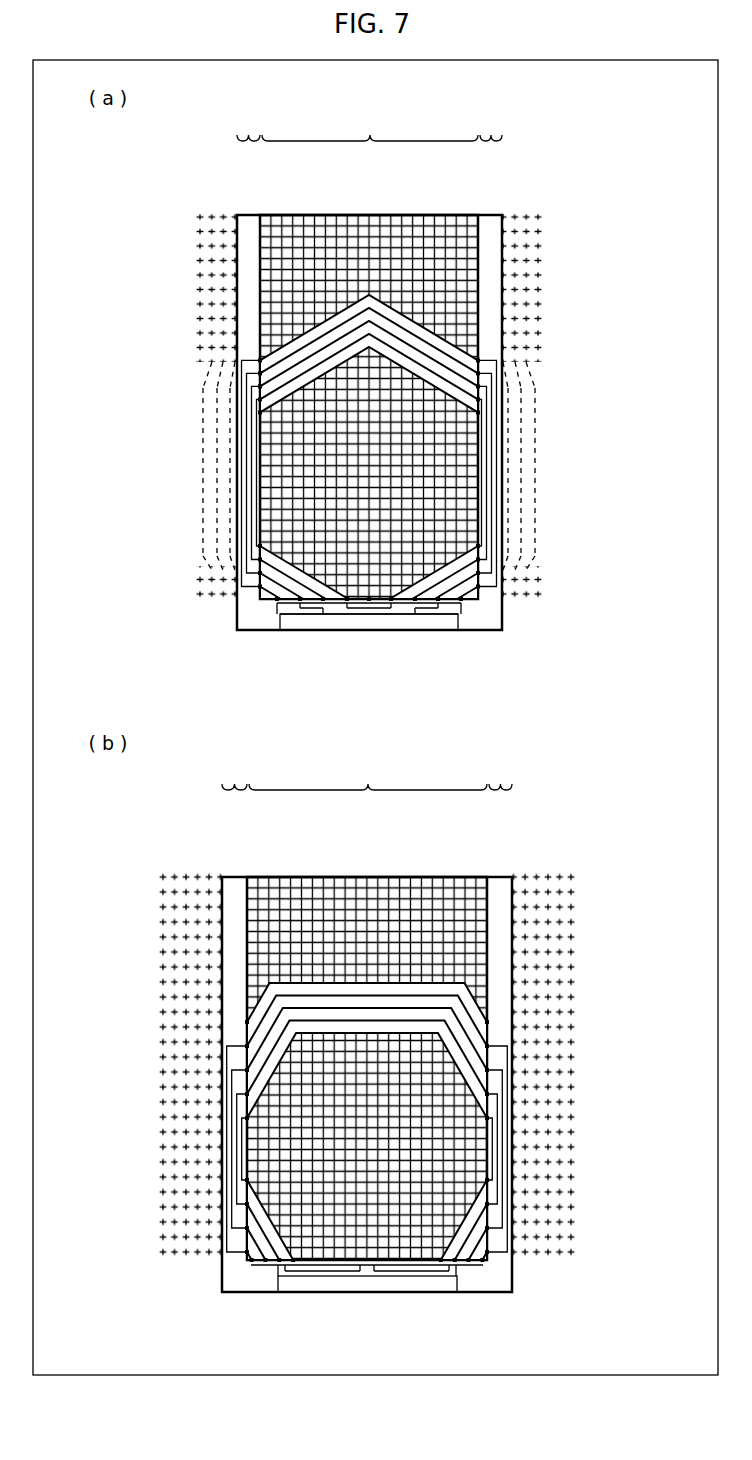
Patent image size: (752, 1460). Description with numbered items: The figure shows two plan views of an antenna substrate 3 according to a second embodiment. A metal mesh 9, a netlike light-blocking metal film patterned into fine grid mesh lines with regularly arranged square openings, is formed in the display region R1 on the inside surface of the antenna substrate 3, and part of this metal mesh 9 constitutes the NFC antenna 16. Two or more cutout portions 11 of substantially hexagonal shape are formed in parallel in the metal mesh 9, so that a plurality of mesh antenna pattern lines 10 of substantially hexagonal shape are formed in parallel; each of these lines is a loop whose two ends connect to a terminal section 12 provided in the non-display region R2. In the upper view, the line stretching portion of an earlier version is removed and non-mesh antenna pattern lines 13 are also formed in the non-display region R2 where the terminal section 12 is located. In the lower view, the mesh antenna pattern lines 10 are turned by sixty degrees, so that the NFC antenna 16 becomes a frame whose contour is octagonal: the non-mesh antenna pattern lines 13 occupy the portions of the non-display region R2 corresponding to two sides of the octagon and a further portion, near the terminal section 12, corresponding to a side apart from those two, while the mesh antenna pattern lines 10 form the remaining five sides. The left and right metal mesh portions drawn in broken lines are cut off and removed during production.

The antenna substrate 3 is at (232, 212).
The metal mesh 9 is at (303, 232).
The mesh antenna pattern lines 10 is at (405, 347).
The cutout portions 11 is at (436, 378).
The terminal section 12 is at (431, 633).
The non-mesh antenna pattern lines 13 is at (246, 350).
The NFC antenna 16 is at (329, 313).
The display region R1 is at (368, 449).
The non-display region R2 is at (551, 1292).